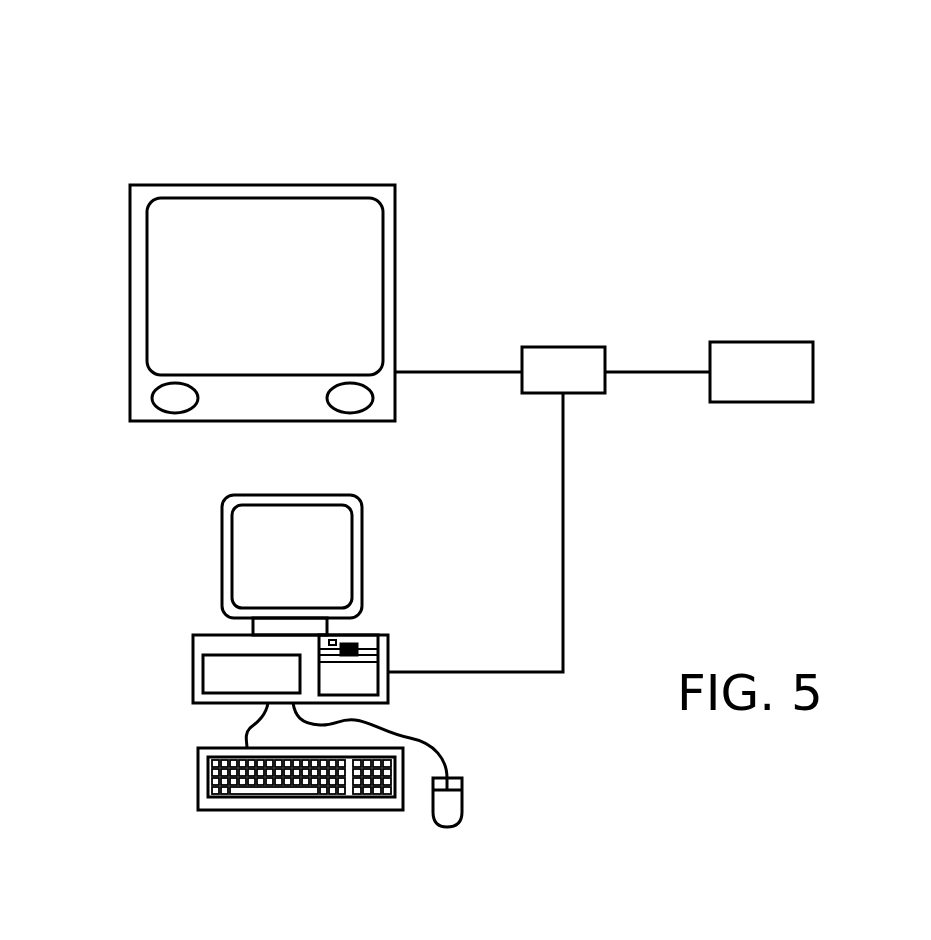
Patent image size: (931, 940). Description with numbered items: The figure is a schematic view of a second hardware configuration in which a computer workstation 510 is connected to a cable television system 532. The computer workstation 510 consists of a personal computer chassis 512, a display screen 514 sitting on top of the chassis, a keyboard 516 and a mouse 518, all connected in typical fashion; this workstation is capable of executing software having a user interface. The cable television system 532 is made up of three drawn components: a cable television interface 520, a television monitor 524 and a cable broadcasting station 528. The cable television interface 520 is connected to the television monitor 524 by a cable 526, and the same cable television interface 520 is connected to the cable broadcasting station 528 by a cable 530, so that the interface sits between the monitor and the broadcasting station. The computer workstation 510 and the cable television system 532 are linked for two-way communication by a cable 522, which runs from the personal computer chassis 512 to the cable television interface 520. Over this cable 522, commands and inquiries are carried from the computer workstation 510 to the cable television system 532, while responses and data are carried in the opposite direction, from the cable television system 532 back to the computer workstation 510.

The computer workstation 510 is at (140, 573).
The personal computer chassis 512 is at (193, 668).
The display screen 514 is at (362, 549).
The keyboard 516 is at (198, 778).
The mouse 518 is at (462, 812).
The cable television interface 520 is at (557, 346).
The cable 522 is at (563, 538).
The television monitor 524 is at (398, 213).
The cable 526 is at (460, 370).
The cable broadcasting station 528 is at (765, 341).
The cable 530 is at (647, 370).
The cable television system 532 is at (640, 128).